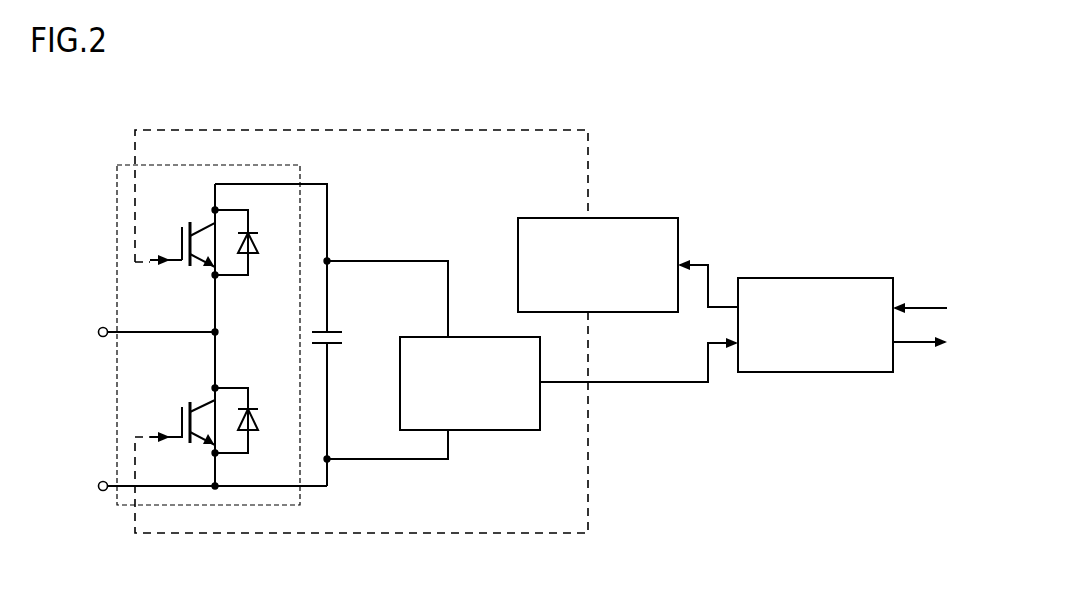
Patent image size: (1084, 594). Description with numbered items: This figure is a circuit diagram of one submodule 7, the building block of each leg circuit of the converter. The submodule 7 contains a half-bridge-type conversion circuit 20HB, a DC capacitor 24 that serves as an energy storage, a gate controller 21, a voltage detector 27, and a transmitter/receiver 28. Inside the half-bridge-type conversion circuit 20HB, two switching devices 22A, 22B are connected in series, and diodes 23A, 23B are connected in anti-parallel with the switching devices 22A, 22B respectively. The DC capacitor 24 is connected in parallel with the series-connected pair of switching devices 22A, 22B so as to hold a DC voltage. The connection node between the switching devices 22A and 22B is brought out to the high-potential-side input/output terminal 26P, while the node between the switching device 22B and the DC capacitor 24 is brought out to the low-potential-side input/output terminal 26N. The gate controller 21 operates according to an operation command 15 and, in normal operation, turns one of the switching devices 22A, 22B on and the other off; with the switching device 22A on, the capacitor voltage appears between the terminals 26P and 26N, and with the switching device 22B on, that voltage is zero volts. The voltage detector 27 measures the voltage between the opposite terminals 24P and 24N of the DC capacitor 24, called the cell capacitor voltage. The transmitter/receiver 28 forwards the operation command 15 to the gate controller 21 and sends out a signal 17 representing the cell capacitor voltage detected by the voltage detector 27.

The submodule 7 is at (55, 133).
The half-bridge-type conversion circuit 20HB is at (240, 165).
The gate controller 21 is at (646, 218).
The switching device 22A is at (187, 268).
The switching device 22B is at (188, 400).
The diode 23A is at (254, 246).
The diode 23B is at (256, 423).
The DC capacitor 24 is at (334, 330).
The terminal of DC capacitor 24P is at (330, 284).
The terminal of DC capacitor 24N is at (330, 368).
The high-potential-side input/output terminal 26P is at (136, 332).
The low-potential-side input/output terminal 26N is at (191, 487).
The voltage detector 27 is at (521, 432).
The transmitter/receiver 28 is at (798, 278).
The operation command 15 is at (922, 302).
The signal representing cell capacitor voltage 17 is at (929, 350).